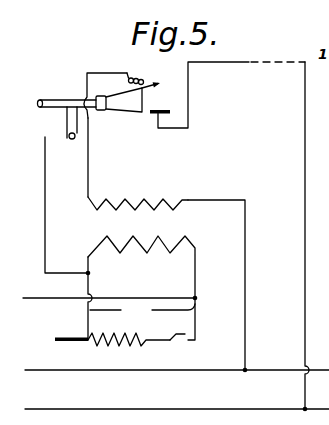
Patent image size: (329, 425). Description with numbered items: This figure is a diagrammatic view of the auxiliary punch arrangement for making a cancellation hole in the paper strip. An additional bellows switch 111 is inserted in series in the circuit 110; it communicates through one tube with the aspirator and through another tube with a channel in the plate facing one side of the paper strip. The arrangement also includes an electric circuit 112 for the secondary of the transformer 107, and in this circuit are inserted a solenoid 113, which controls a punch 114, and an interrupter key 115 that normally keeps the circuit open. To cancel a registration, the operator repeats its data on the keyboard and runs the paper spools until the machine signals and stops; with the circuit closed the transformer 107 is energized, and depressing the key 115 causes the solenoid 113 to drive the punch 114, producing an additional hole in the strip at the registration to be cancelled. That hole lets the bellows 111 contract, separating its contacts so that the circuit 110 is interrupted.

The transformer 107 is at (105, 211).
The circuit 110 is at (249, 63).
The bellows switch 111 is at (119, 89).
The electric circuit 112 is at (142, 311).
The solenoid 113 is at (104, 348).
The punch 114 is at (68, 337).
The interrupter key 115 is at (174, 342).